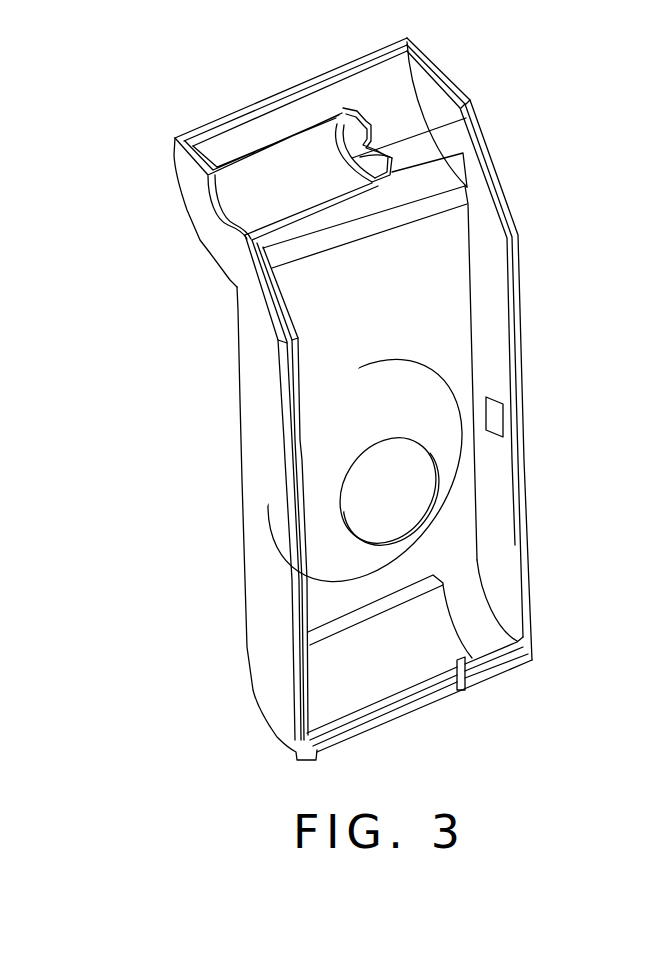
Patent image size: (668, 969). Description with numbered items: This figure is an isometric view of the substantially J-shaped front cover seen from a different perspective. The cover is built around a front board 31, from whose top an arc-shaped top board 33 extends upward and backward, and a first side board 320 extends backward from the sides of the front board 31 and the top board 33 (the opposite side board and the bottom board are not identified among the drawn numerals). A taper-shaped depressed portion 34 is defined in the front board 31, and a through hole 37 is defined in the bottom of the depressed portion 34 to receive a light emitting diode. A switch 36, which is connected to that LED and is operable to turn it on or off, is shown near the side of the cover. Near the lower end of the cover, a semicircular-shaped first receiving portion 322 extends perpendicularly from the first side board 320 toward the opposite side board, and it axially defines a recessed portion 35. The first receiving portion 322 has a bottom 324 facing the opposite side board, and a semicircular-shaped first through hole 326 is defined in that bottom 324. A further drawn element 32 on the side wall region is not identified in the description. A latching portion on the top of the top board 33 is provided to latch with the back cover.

The front board 31 is at (425, 265).
The side wall 32 is at (493, 300).
The top board 33 is at (488, 642).
The depressed portion 34 is at (437, 415).
The recessed portion 35 is at (250, 200).
The switch 36 is at (500, 419).
The through hole 37 is at (387, 493).
The first side board 320 is at (273, 510).
The first receiving portion 322 is at (205, 177).
The bottom 324 is at (357, 157).
The first through hole 326 is at (373, 137).